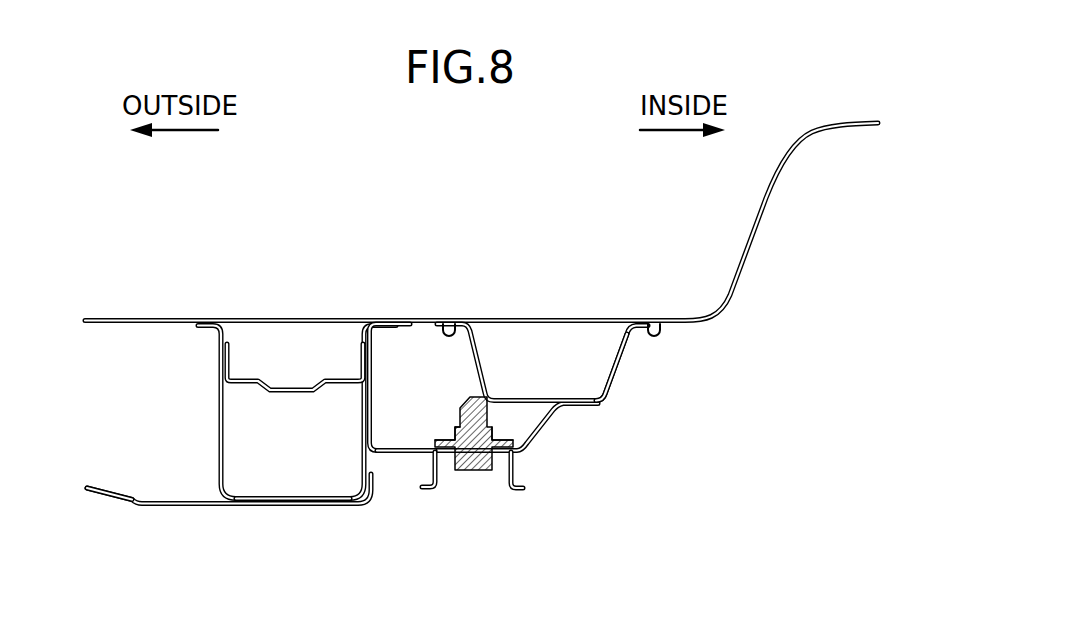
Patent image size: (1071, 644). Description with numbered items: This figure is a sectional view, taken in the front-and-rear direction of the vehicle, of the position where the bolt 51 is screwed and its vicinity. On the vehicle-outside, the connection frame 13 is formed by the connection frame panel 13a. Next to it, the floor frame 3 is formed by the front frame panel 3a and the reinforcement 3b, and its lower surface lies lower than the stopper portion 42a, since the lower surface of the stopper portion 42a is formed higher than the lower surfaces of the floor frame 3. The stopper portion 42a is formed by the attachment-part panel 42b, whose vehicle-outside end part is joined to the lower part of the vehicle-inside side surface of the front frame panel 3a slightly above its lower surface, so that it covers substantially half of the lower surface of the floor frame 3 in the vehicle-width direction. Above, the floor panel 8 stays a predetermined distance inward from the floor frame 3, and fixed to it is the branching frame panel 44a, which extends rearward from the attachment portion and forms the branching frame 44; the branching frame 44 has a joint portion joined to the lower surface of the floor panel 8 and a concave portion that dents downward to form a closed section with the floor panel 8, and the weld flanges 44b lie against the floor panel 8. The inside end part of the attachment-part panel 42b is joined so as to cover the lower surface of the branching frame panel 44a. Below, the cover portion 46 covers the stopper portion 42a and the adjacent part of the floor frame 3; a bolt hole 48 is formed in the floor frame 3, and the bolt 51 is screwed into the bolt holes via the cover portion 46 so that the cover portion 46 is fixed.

The floor frame 3 is at (293, 511).
The front frame panel 3a is at (282, 498).
The reinforcement 3b is at (294, 385).
The floor panel 8 is at (519, 318).
The connection frame 13 is at (168, 505).
The connection frame panel 13a is at (133, 498).
The stopper portion 42a is at (402, 455).
The attachment-part panel 42b is at (417, 445).
The branching frame 44 is at (591, 386).
The branching frame panel 44a is at (625, 365).
The weld flange of cross member 44b is at (446, 330).
The cover portion 46 is at (517, 478).
The bolt hole 48 is at (495, 428).
The bolt 51 is at (470, 473).